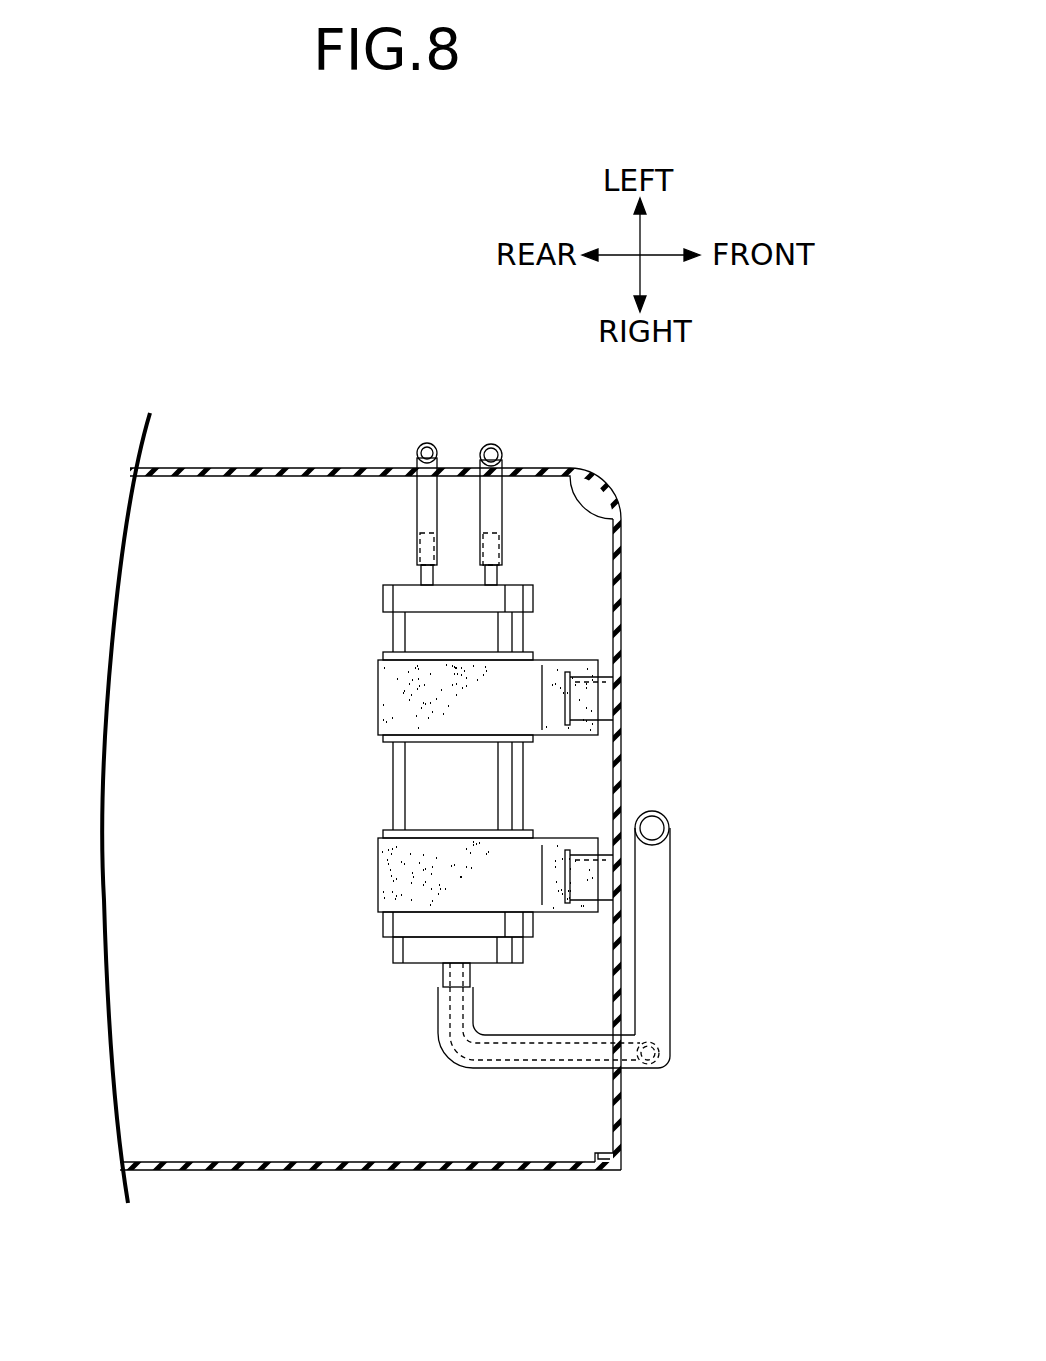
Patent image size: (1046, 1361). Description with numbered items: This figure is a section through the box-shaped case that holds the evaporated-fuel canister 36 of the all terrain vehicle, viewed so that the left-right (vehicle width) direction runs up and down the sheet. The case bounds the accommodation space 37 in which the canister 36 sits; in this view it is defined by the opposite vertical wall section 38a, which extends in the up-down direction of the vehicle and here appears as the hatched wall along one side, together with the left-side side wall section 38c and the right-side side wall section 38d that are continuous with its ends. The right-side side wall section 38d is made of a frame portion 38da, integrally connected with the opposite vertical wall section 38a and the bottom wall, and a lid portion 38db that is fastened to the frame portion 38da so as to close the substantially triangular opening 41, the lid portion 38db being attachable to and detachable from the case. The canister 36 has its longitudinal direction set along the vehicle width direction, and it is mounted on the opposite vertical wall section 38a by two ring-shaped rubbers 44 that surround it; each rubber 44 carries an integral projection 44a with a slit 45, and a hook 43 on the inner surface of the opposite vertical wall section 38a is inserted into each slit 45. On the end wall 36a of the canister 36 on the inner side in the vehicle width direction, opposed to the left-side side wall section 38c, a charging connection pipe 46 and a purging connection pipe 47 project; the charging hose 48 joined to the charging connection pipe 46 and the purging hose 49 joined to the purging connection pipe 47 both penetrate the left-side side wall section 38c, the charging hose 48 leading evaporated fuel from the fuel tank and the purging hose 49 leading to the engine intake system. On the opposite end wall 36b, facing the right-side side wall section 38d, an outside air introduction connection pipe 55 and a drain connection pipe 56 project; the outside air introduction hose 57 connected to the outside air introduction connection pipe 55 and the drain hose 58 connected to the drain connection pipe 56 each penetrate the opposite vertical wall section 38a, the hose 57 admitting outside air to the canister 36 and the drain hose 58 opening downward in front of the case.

The canister 36 is at (410, 782).
The end wall on the inner side in the vehicle width direction 36a is at (398, 590).
The end wall on the outer side in the vehicle width direction 36b is at (428, 965).
The accommodation space 37 is at (226, 983).
The opposite vertical wall section 38a is at (622, 600).
The left-side side wall section 38c is at (242, 467).
The right-side side wall section 38d is at (393, 1224).
The frame portion 38da is at (627, 1150).
The lid portion 38db is at (523, 1172).
The opening 41 is at (606, 1158).
The hook 43 is at (606, 683).
The ring-shaped rubber 44 is at (390, 705).
The projection 44a is at (580, 736).
The slit 45 is at (565, 695).
The charging connection pipe 46 is at (423, 576).
The purging connection pipe 47 is at (492, 577).
The charging hose 48 is at (438, 505).
The purging hose 49 is at (503, 512).
The outside air introduction connection pipe 55 is at (472, 972).
The drain connection pipe 56 is at (445, 1035).
The outside air introduction hose 57 is at (668, 893).
The drain hose 58 is at (460, 1052).